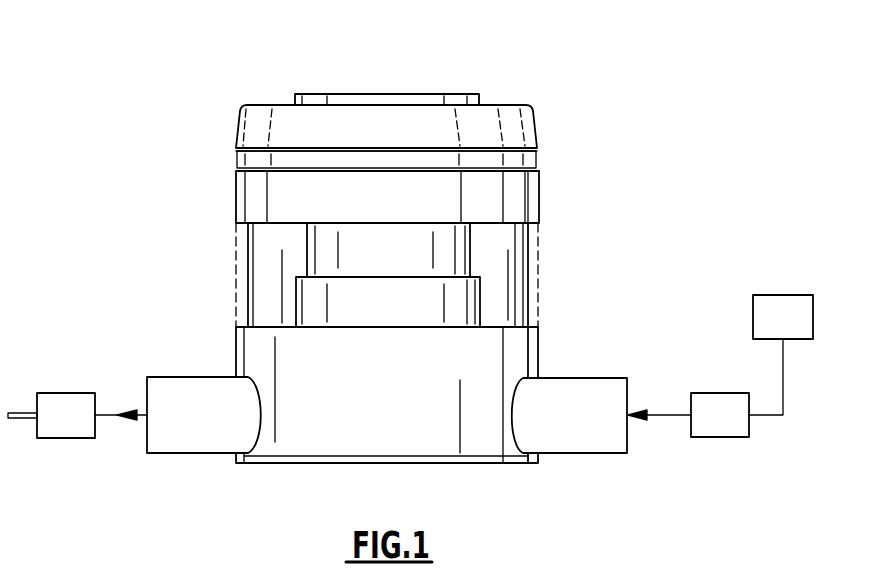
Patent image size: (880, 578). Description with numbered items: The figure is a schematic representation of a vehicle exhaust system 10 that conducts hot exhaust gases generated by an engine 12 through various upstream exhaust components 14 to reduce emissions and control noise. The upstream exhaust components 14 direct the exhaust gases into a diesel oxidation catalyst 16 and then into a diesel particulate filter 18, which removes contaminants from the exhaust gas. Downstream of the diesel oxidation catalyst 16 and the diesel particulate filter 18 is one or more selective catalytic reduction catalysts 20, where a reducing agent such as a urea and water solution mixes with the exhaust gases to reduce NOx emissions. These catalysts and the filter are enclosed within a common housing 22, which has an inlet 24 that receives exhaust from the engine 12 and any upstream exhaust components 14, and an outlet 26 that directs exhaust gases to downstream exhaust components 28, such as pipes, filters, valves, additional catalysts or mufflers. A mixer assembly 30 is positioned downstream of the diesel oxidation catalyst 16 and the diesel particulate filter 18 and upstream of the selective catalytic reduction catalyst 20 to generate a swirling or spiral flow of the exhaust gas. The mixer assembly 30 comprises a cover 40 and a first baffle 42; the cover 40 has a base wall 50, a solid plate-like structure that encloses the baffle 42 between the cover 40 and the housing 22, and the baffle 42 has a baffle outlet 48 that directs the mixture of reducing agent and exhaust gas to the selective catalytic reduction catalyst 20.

The vehicle exhaust system 10 is at (642, 158).
The engine 12 is at (767, 330).
The upstream exhaust components 14 is at (704, 428).
The diesel oxidation catalyst 16 is at (372, 315).
The diesel particulate filter 18 is at (372, 265).
The selective catalytic reduction catalyst 20 is at (265, 275).
The housing 22 is at (555, 309).
The inlet 24 is at (580, 443).
The outlet 26 is at (180, 443).
The downstream exhaust components 28 is at (50, 429).
The mixer assembly 30 is at (218, 120).
The cover 40 is at (528, 130).
The first baffle 42 is at (537, 160).
The baffle outlet 48 is at (490, 103).
The base wall 50 is at (265, 118).